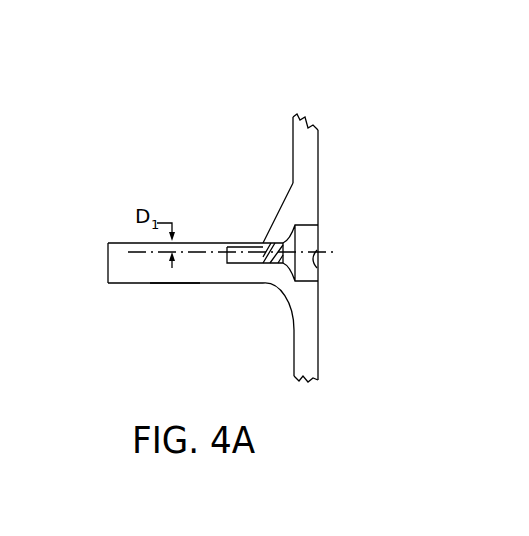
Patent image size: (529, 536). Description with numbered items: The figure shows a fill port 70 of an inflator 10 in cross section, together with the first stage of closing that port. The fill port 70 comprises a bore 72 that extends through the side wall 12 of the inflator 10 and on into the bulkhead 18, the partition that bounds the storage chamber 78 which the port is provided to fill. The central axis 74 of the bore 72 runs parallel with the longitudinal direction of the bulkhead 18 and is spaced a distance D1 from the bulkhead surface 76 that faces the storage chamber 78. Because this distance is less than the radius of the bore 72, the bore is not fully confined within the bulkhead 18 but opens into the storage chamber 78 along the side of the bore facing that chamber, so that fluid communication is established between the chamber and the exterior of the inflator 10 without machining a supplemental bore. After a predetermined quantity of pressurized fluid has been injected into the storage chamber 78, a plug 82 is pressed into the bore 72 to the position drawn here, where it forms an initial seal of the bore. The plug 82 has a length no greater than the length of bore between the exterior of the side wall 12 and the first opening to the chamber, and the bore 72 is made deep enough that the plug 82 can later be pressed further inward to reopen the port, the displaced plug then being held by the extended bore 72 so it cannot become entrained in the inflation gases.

The inflator 10 is at (316, 106).
The side wall 12 is at (317, 170).
The bulkhead 18 is at (157, 270).
The fill port 70 is at (319, 237).
The bore 72 is at (233, 246).
The central axis 74 is at (317, 267).
The bulkhead surface 76 is at (120, 243).
The storage chamber 78 is at (262, 173).
The plug 82 is at (268, 264).